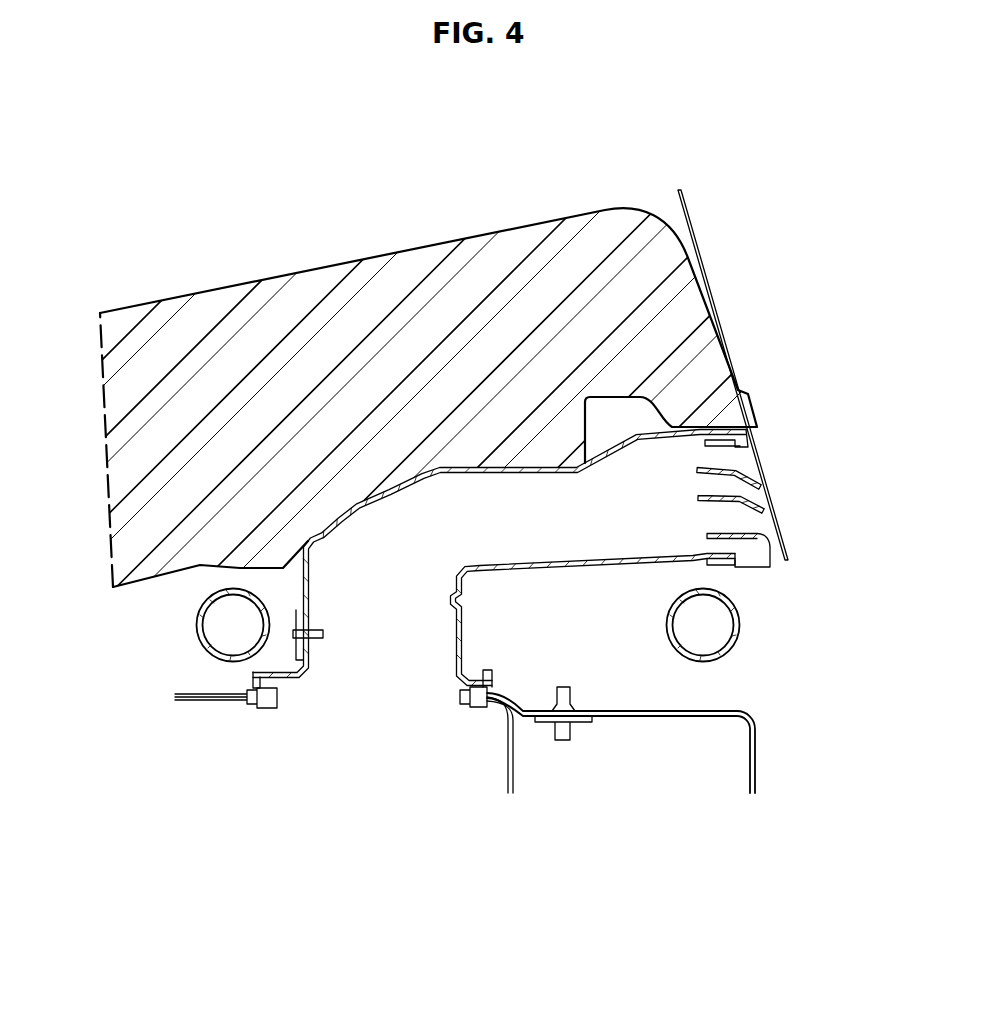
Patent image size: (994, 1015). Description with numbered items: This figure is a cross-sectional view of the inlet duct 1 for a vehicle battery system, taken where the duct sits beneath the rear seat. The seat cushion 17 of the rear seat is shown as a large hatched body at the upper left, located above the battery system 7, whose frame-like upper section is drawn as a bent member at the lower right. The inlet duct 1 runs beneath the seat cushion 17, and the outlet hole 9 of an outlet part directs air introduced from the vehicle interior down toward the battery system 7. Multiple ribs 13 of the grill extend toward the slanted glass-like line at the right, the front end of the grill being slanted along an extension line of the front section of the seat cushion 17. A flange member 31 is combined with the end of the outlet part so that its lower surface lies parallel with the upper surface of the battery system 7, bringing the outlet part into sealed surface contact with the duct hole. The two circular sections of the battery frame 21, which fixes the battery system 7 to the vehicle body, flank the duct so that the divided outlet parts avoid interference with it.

The inlet duct 1 is at (613, 640).
The battery system 7 is at (757, 755).
The outlet hole 9 is at (393, 660).
The rib 13 is at (773, 500).
The seat cushion 17 is at (312, 308).
The battery frame 21 is at (197, 628).
The flange member 31 is at (462, 677).